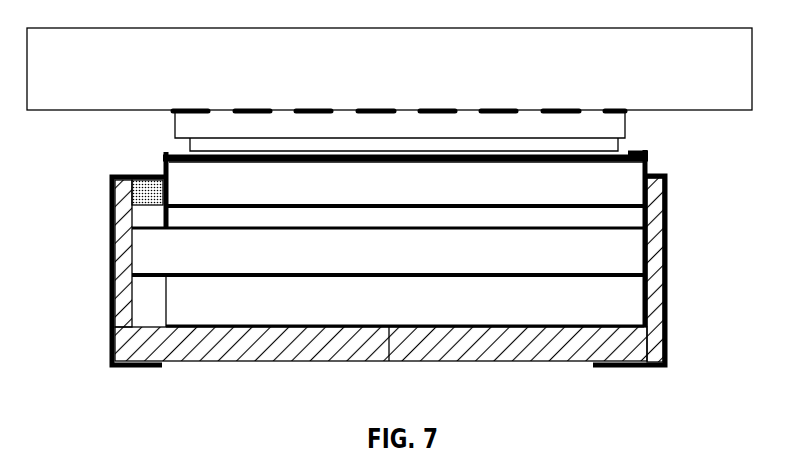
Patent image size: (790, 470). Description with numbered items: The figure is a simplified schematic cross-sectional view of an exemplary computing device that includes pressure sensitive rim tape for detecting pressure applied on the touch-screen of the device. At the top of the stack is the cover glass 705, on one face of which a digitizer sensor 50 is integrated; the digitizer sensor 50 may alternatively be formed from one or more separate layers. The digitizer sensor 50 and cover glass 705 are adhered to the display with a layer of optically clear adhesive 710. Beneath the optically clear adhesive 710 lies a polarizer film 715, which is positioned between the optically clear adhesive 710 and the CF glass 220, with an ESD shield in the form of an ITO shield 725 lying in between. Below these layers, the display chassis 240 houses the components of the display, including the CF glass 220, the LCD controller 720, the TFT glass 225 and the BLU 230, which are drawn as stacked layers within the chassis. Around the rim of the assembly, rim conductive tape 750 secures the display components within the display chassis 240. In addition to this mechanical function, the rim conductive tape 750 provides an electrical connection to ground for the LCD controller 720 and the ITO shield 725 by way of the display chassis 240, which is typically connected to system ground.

The cover glass 705 is at (699, 106).
The digitizer sensor 50 is at (585, 114).
The optically clear adhesive 710 is at (174, 118).
The polarizer film 715 is at (206, 150).
The ITO shield 725 is at (256, 163).
The CF glass 220 is at (620, 173).
The TFT glass 225 is at (625, 261).
The BLU 230 is at (625, 300).
The display chassis 240 is at (645, 342).
The LCD controller 720 is at (140, 200).
The rim conductive tape 750 is at (110, 300).